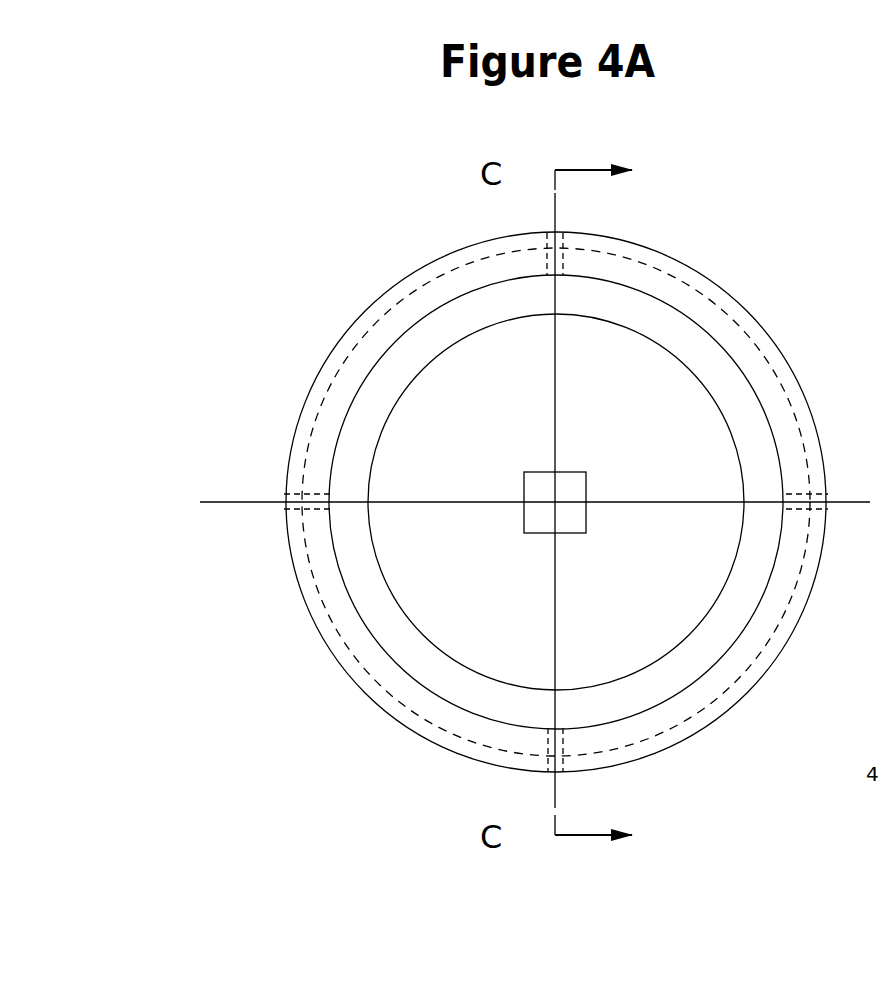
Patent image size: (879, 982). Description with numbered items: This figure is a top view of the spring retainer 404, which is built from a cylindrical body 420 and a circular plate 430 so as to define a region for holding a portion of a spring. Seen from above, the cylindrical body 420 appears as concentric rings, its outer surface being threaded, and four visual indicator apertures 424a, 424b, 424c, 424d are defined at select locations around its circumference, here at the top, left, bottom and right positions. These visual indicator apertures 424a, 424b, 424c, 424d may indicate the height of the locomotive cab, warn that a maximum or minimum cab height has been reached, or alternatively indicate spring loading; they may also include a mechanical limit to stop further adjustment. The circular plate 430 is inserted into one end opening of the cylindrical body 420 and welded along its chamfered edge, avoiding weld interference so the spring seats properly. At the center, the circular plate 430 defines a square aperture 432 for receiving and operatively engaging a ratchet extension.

The spring retainer 404 is at (356, 766).
The cylindrical body 420 is at (422, 263).
The visual indicator aperture 424a is at (563, 262).
The visual indicator aperture 424b is at (298, 502).
The visual indicator aperture 424c is at (565, 770).
The visual indicator aperture 424d is at (805, 490).
The circular plate 430 is at (405, 382).
The aperture 432 is at (578, 523).